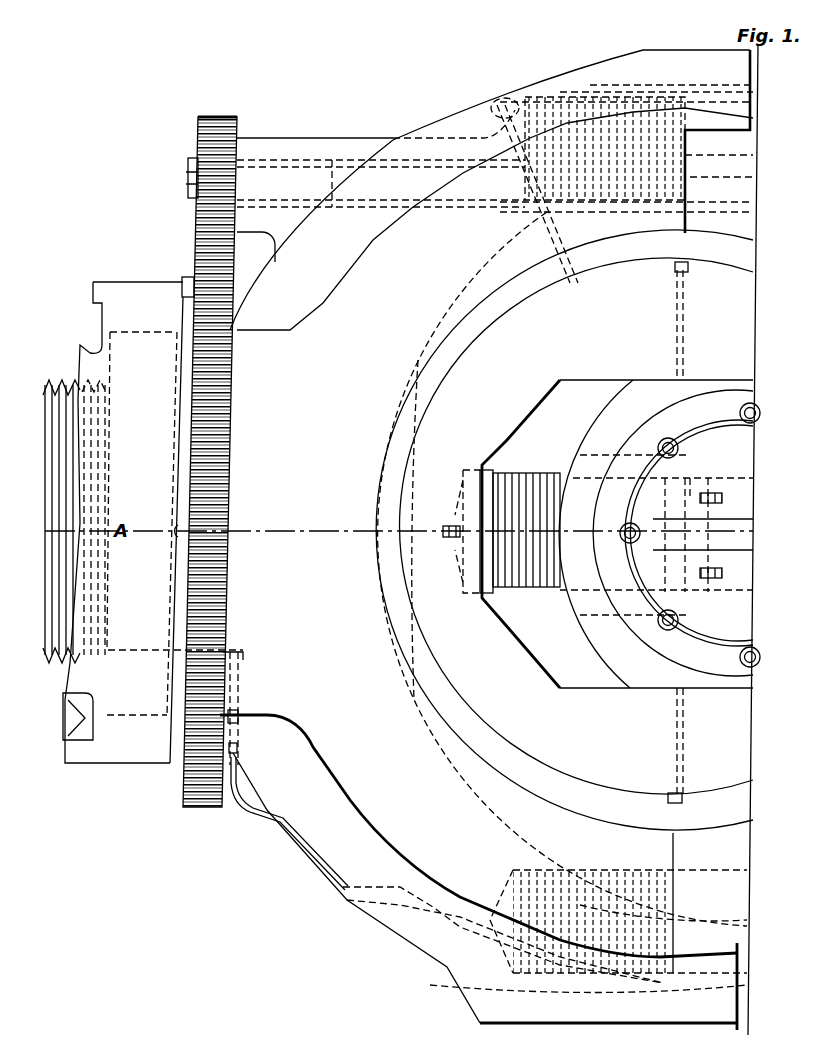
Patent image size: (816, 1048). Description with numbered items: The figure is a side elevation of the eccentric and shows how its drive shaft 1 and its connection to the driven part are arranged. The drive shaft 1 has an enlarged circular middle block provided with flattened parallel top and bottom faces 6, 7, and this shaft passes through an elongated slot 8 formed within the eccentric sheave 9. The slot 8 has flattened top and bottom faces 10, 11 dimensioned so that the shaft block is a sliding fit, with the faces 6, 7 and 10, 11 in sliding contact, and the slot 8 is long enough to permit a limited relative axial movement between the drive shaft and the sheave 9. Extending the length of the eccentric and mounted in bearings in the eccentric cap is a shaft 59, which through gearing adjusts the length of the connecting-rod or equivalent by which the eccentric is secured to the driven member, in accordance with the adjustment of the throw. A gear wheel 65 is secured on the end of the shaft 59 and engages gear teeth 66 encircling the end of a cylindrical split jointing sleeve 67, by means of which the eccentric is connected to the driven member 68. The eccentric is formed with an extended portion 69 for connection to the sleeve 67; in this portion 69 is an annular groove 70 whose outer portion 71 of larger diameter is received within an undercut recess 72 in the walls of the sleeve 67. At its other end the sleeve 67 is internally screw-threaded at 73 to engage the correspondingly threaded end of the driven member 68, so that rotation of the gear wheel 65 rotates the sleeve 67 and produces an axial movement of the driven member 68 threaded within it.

The drive shaft 1 is at (694, 573).
The flattened top face 6 is at (708, 382).
The flattened bottom face 7 is at (738, 690).
The elongated slot 8 is at (582, 405).
The eccentric sheave 9 is at (457, 378).
The flattened top face of slot 10 is at (625, 380).
The flattened bottom face of slot 11 is at (596, 690).
The shaft 59 is at (375, 192).
The gear wheel 65 is at (213, 117).
The gear teeth 66 is at (196, 272).
The split jointing sleeve 67 is at (98, 297).
The driven member 68 is at (94, 418).
The extended portion 69 is at (177, 393).
The annular groove 70 is at (165, 717).
The outer portion of groove 71 is at (140, 703).
The undercut recess 72 is at (112, 715).
The internal screw thread 73 is at (110, 340).